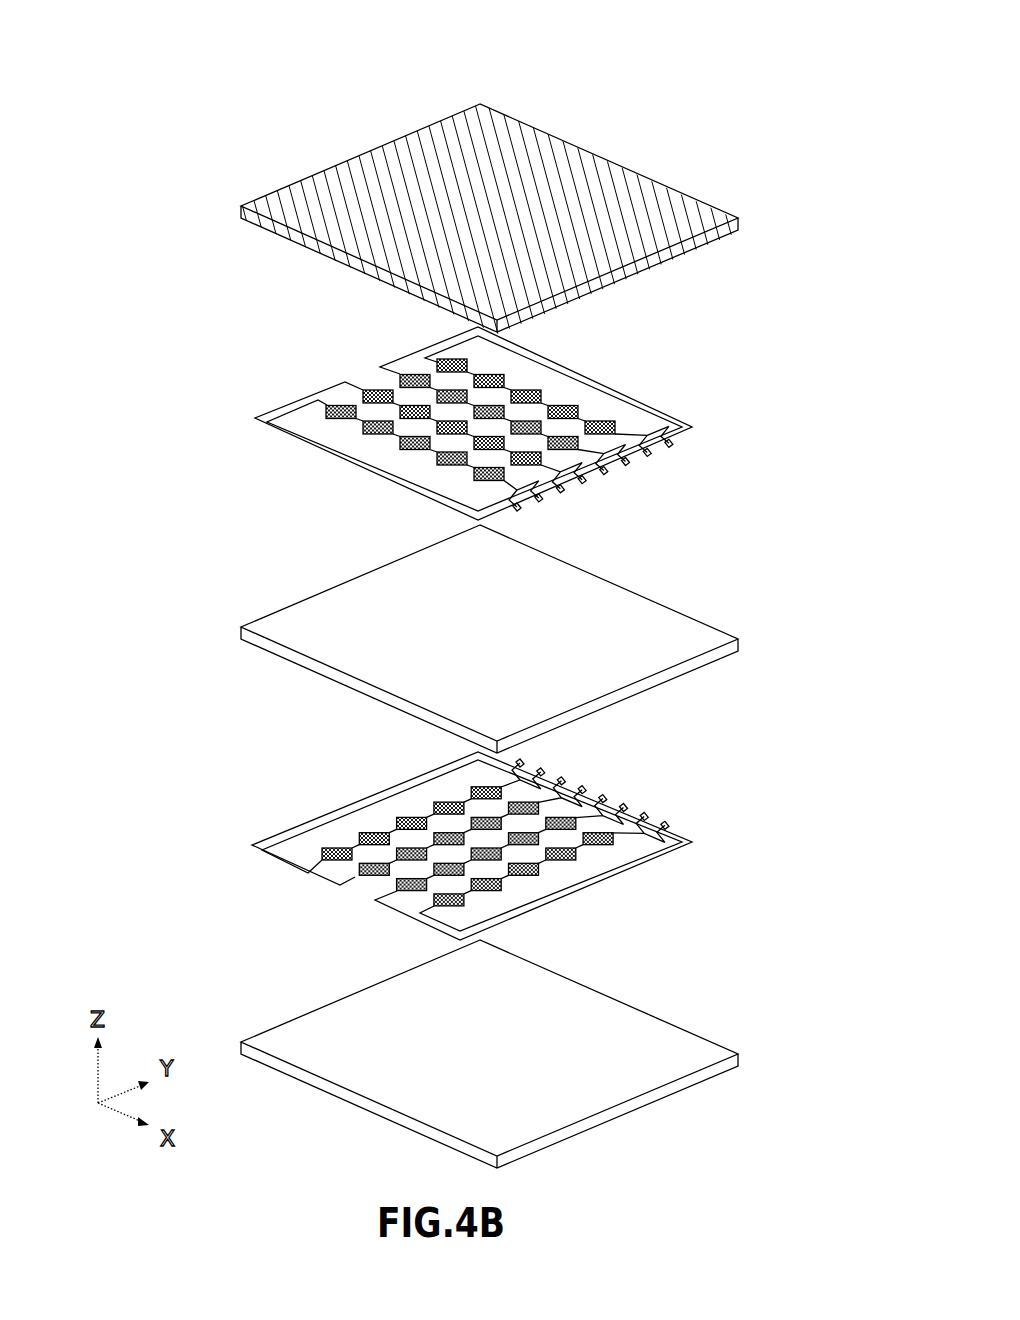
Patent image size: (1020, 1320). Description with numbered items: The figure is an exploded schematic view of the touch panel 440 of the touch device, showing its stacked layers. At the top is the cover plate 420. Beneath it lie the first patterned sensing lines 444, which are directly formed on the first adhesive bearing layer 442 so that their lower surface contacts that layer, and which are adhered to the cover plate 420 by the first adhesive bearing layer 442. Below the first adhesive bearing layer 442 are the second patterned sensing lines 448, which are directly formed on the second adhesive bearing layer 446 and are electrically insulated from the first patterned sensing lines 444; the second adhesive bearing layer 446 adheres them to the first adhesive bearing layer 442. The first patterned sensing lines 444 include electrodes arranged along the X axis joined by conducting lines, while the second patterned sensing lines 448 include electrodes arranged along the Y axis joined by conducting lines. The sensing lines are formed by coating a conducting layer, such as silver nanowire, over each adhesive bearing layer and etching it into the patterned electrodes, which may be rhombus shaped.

The touch panel 440 is at (110, 29).
The cover plate 420 is at (672, 190).
The first patterned sensing lines 444 is at (673, 420).
The first adhesive bearing layer 442 is at (697, 628).
The second patterned sensing lines 448 is at (673, 842).
The second adhesive bearing layer 446 is at (697, 1045).